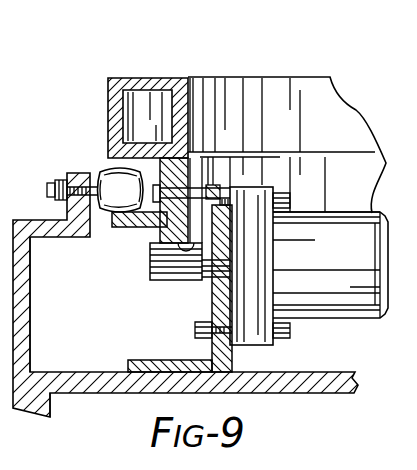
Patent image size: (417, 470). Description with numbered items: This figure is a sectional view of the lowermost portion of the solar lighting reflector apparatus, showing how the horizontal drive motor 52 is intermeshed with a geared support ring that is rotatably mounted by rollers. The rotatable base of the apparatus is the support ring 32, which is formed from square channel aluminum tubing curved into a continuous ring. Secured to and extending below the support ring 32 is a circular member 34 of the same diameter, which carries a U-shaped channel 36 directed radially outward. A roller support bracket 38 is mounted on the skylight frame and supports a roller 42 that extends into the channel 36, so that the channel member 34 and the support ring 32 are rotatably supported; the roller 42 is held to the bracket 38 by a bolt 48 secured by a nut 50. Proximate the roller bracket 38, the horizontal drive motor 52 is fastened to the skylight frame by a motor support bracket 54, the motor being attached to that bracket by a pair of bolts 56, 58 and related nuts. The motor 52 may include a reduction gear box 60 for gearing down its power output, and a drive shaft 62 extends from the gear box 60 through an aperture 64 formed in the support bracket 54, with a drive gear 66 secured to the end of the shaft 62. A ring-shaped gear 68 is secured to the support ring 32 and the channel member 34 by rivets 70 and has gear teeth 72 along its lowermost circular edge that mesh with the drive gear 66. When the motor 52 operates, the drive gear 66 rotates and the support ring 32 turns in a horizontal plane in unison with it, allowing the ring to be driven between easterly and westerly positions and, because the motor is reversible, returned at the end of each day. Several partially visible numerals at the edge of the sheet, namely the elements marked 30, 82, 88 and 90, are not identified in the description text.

The support member 30 is at (8, 152).
The support ring 32 is at (166, 52).
The circular member 34 is at (103, 216).
The U-shaped channel 36 is at (137, 228).
The roller support bracket 38 is at (32, 282).
The roller 42 is at (97, 166).
The bolt 48 is at (80, 178).
The nut 50 is at (52, 182).
The horizontal drive motor 52 is at (346, 269).
The motor support bracket 54 is at (212, 330).
The bolt 56 is at (290, 208).
The bolt 58 is at (285, 338).
The reduction gear box 60 is at (258, 188).
The drive shaft 62 is at (212, 288).
The aperture 64 is at (207, 300).
The drive gear 66 is at (148, 270).
The ring-shaped gear 68 is at (198, 170).
The rivets 70 is at (205, 187).
The gear teeth 72 is at (232, 242).
The member 82 is at (6, 206).
The member 88 is at (8, 64).
The member 90 is at (9, 14).